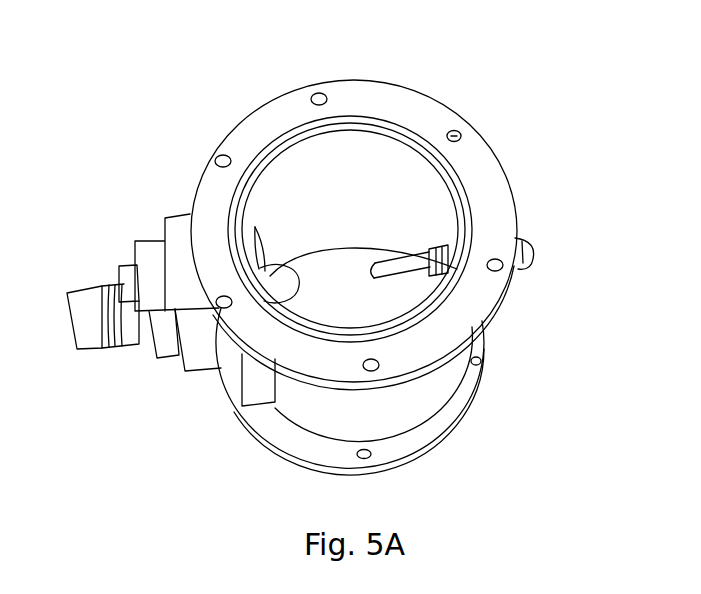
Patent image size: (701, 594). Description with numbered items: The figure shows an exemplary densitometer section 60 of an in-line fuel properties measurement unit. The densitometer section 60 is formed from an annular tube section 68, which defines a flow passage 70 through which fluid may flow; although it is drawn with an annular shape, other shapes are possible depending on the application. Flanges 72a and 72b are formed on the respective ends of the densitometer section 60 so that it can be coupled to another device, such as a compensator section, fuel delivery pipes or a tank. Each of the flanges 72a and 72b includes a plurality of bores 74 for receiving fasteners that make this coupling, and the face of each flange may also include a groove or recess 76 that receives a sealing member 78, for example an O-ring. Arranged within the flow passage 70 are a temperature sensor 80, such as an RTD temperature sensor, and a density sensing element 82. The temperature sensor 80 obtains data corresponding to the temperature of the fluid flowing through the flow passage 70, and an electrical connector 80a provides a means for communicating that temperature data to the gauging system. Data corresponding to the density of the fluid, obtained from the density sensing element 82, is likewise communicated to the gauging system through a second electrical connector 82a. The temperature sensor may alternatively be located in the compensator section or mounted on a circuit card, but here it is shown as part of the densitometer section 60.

The densitometer section 60 is at (331, 250).
The annular tube section 68 is at (307, 412).
The flow passage 70 is at (367, 212).
The flange 72a is at (502, 303).
The flange 72b is at (480, 390).
The bores 74 is at (458, 123).
The groove or recess 76 is at (409, 111).
The sealing member 78 is at (367, 125).
The temperature sensor 80 is at (388, 268).
The electrical connector 80a is at (524, 237).
The density sensing element 82 is at (285, 281).
The electrical connector 82a is at (87, 300).